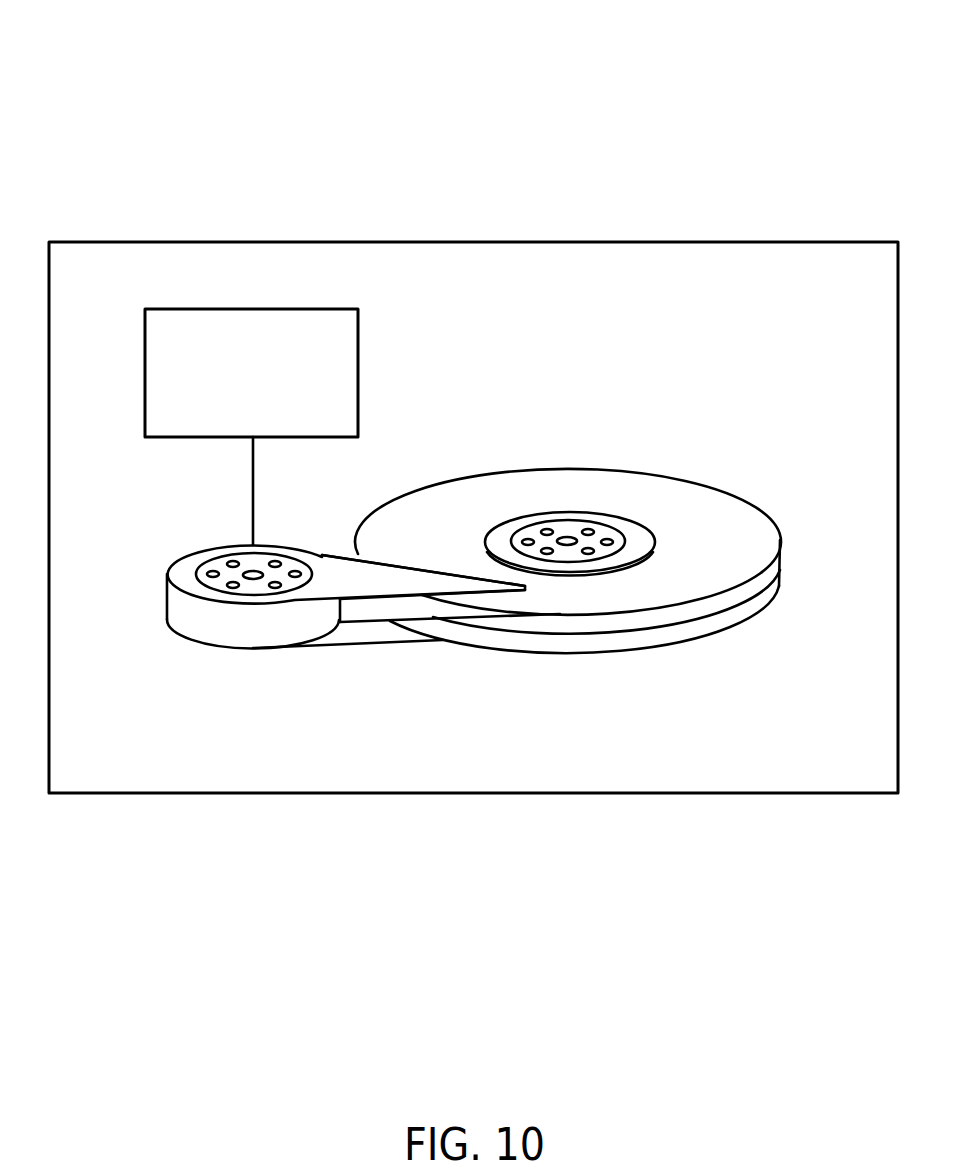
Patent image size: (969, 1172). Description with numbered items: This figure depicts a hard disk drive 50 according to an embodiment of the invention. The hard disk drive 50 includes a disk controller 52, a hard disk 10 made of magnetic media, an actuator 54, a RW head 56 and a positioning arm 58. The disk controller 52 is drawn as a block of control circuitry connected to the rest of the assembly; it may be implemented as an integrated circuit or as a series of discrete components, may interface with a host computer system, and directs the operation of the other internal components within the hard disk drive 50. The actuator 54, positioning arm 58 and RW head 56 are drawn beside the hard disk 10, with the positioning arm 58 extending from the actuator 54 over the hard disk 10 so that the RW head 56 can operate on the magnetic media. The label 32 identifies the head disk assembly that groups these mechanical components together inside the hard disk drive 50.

The hard disk drive 50 is at (702, 128).
The head disk assembly 32 is at (495, 326).
The disk controller 52 is at (271, 429).
The hard disk 10 is at (771, 521).
The actuator 54 is at (170, 576).
The RW head 56 is at (496, 584).
The positioning arm 58 is at (354, 556).